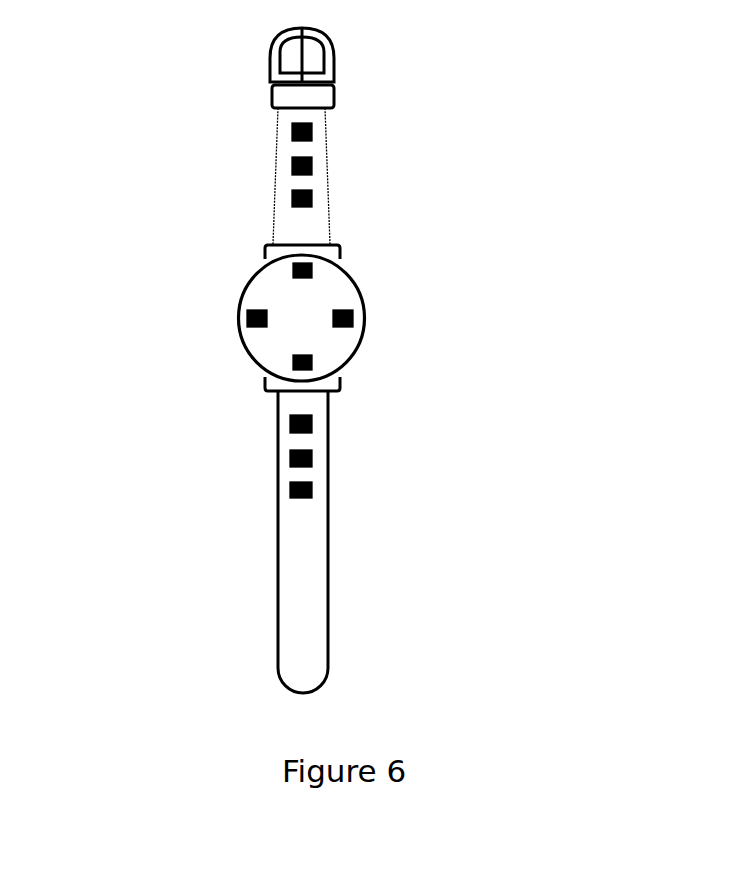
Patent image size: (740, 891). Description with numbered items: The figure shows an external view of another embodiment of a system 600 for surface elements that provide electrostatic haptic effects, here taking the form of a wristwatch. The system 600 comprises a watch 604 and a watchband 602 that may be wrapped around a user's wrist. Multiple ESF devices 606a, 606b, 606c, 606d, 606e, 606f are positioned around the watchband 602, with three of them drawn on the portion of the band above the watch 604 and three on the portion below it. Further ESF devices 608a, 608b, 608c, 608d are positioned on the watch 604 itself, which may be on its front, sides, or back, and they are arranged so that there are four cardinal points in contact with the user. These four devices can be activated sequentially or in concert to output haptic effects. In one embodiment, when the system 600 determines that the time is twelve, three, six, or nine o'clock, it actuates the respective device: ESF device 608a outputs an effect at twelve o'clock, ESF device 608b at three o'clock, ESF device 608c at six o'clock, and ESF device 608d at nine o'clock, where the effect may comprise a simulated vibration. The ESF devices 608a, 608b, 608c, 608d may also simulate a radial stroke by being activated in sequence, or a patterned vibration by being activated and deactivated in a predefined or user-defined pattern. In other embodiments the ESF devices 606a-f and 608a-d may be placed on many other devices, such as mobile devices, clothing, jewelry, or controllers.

The system 600 is at (205, 102).
The watchband 602 is at (306, 655).
The watch 604 is at (343, 345).
The ESF device 606a is at (278, 131).
The ESF device 606b is at (277, 165).
The ESF device 606c is at (276, 198).
The ESF device 606d is at (277, 425).
The ESF device 606e is at (277, 458).
The ESF device 606f is at (277, 490).
The ESF device 608a is at (315, 268).
The ESF device 608b is at (361, 310).
The ESF device 608c is at (326, 363).
The ESF device 608d is at (238, 320).